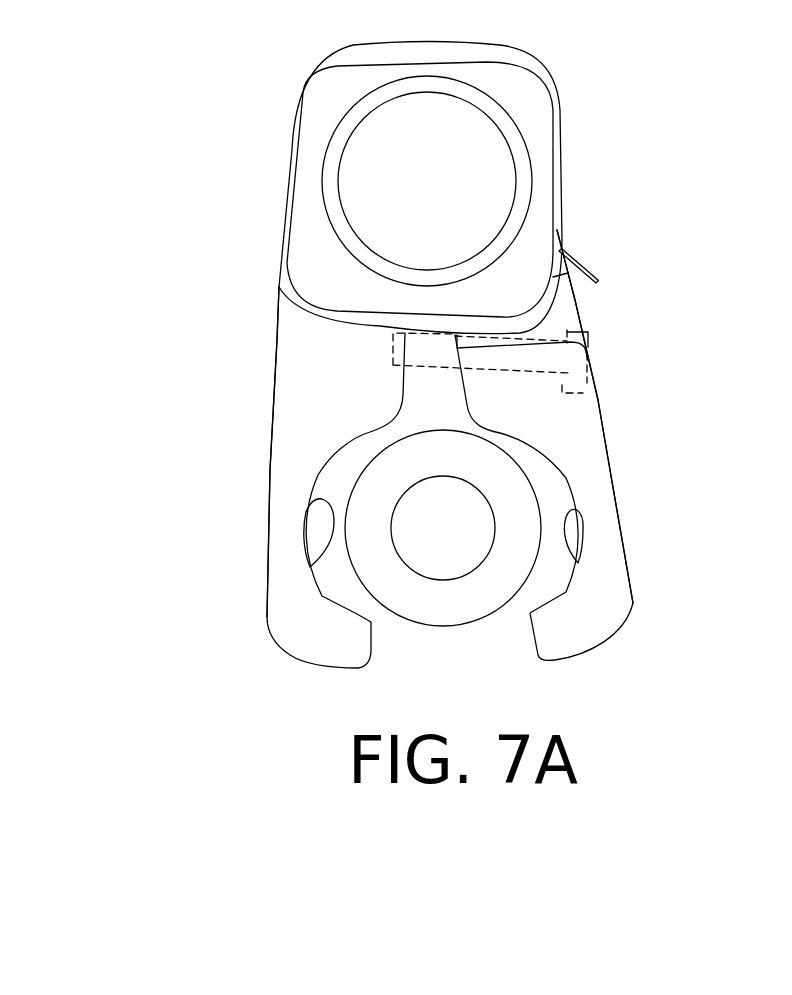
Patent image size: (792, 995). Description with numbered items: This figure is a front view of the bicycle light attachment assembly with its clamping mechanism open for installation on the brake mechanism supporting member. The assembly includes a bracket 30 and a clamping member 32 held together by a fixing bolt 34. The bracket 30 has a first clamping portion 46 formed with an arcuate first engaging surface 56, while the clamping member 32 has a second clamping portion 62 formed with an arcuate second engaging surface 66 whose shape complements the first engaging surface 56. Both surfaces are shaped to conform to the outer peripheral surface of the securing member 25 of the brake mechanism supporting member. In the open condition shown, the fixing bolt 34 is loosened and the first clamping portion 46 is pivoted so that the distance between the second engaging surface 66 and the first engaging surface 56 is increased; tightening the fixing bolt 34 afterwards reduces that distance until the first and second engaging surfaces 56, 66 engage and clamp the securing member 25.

The securing member 25 is at (462, 608).
The bracket 30 is at (227, 405).
The clamping member 32 is at (668, 425).
The fixing bolt 34 is at (563, 375).
The first clamping portion 46 is at (285, 469).
The first engaging surface 56 is at (312, 566).
The second clamping portion 62 is at (607, 520).
The second engaging surface 66 is at (567, 537).